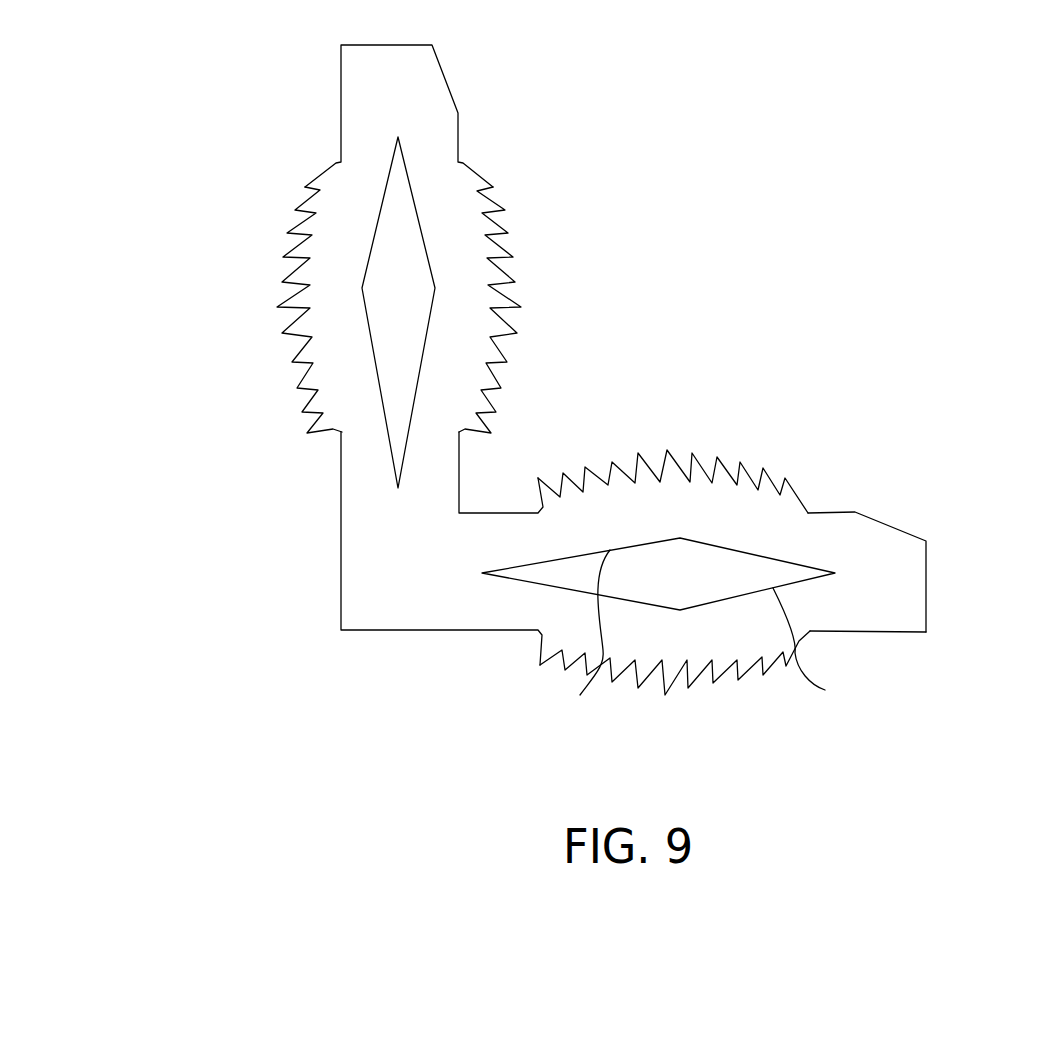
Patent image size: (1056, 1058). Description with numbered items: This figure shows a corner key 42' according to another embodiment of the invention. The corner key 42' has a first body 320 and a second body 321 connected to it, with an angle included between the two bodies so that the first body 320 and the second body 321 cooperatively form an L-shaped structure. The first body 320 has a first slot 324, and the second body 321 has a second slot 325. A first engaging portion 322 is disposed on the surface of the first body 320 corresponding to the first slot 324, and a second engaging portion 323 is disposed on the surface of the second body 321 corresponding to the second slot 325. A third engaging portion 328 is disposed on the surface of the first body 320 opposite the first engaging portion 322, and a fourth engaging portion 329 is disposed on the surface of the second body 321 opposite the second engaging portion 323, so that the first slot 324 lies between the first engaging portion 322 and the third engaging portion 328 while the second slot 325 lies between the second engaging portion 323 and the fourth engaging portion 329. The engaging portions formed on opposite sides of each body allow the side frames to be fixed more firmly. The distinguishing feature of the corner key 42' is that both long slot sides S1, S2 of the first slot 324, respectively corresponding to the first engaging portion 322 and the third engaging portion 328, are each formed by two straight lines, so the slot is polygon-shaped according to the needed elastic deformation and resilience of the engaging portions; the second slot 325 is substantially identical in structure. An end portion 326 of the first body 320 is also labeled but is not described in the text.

The corner key 42' is at (599, 415).
The first body 320 is at (868, 633).
The second body 321 is at (342, 72).
The first engaging portion 322 is at (807, 477).
The second engaging portion 323 is at (532, 250).
The first slot 324 is at (482, 578).
The second slot 325 is at (378, 155).
The end portion 326 is at (926, 574).
The third engaging portion 328 is at (658, 708).
The fourth engaging portion 329 is at (277, 248).
The long slot side S1 is at (583, 639).
The long slot side S2 is at (814, 645).